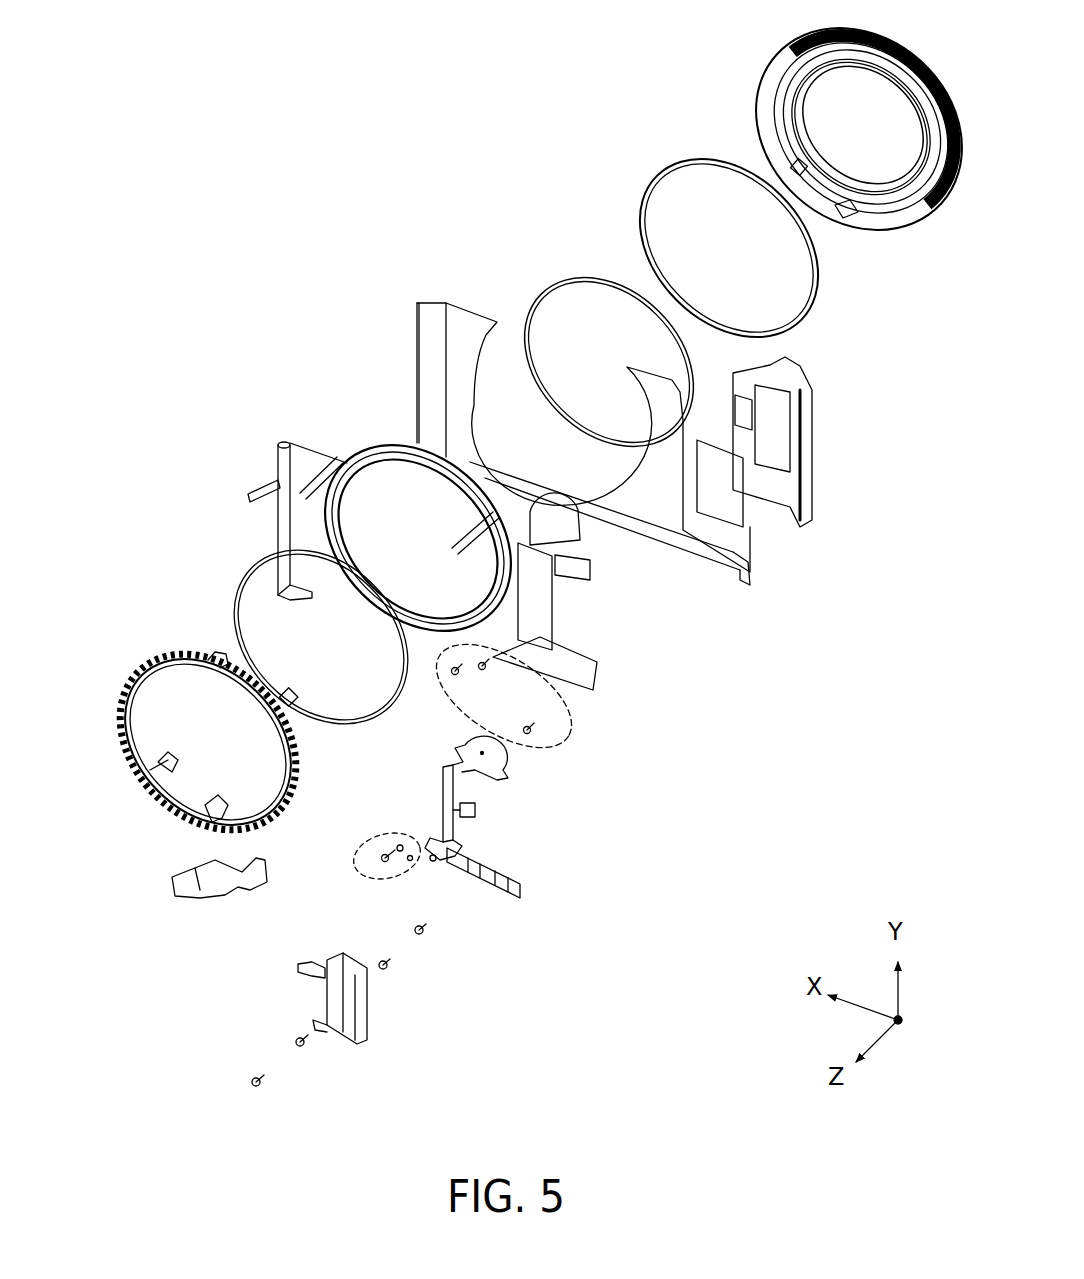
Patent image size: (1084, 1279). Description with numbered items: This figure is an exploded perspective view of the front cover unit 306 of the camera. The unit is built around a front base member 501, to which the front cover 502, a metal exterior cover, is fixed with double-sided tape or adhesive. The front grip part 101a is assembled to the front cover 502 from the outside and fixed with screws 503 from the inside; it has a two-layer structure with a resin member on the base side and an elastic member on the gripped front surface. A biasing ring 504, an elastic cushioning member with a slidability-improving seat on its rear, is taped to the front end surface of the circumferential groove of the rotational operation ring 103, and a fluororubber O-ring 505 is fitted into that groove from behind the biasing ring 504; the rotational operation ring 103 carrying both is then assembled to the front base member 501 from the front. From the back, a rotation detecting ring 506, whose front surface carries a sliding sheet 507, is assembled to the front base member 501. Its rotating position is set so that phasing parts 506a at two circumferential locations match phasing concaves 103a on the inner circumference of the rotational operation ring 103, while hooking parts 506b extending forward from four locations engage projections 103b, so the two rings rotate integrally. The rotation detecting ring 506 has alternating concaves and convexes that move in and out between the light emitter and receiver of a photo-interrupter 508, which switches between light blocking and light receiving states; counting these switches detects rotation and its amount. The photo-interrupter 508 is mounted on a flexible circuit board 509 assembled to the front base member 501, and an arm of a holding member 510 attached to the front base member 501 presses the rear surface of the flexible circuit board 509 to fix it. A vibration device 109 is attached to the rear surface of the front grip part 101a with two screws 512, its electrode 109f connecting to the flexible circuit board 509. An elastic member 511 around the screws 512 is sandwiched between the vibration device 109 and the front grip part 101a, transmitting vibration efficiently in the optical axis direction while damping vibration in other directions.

The front cover unit 306 is at (329, 125).
The rotational operation ring 103 is at (821, 136).
The phasing concaves 103a is at (882, 267).
The projections 103b is at (793, 126).
The biasing ring 504 is at (687, 248).
The O-ring 505 is at (575, 354).
The front cover 502 is at (524, 439).
The front grip part 101a is at (848, 470).
The front base member 501 is at (379, 538).
The sliding sheet 507 is at (276, 633).
The rotation detecting ring 506 is at (190, 732).
The phasing parts 506a is at (225, 767).
The hooking parts 506b is at (110, 798).
The screws 503 is at (564, 719).
The flexible circuit board 509 is at (570, 873).
The photo-interrupter 508 is at (502, 932).
The holding member 510 is at (181, 918).
The vibration device 109 is at (403, 1026).
The electrode 109f is at (250, 959).
The screws 512 is at (209, 1060).
The elastic member 511 is at (482, 1001).